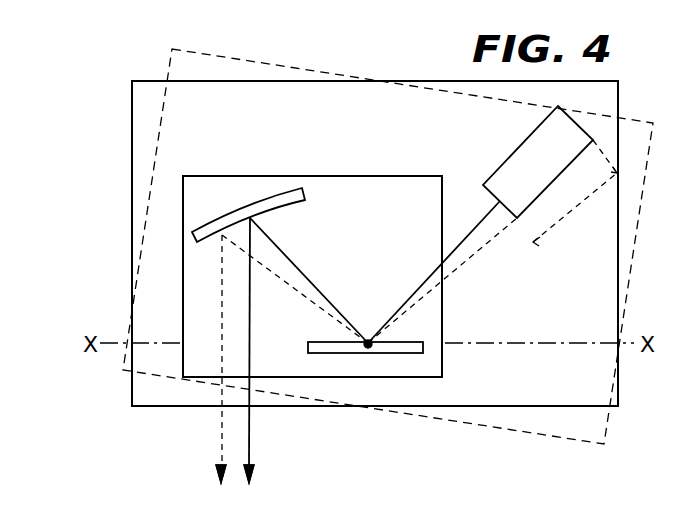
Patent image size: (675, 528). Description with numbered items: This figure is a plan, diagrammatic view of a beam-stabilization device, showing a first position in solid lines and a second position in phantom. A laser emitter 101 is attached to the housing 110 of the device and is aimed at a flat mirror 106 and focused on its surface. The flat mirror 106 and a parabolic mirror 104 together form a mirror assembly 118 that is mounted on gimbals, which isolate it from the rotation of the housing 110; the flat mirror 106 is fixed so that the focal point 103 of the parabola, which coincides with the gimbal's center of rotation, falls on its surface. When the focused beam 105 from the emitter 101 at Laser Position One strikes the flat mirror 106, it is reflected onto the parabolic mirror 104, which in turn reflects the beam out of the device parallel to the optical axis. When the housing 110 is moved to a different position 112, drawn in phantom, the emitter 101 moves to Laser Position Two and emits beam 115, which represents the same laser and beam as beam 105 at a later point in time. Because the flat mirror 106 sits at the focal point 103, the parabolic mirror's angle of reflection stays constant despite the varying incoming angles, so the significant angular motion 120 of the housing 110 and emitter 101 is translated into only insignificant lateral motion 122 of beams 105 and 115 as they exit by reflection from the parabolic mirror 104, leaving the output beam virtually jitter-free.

The housing 110 is at (132, 118).
The different position 112 is at (242, 60).
The mirror assembly 118 is at (340, 175).
The electromagnetic beam emitter 101 is at (492, 177).
The parabolic mirror 104 is at (305, 200).
The beam 105 is at (252, 330).
The beam 115 is at (220, 328).
The focal point 103 is at (372, 345).
The flat mirror 106 is at (428, 334).
The angular movement 120 is at (463, 243).
The lateral movement 122 is at (223, 441).